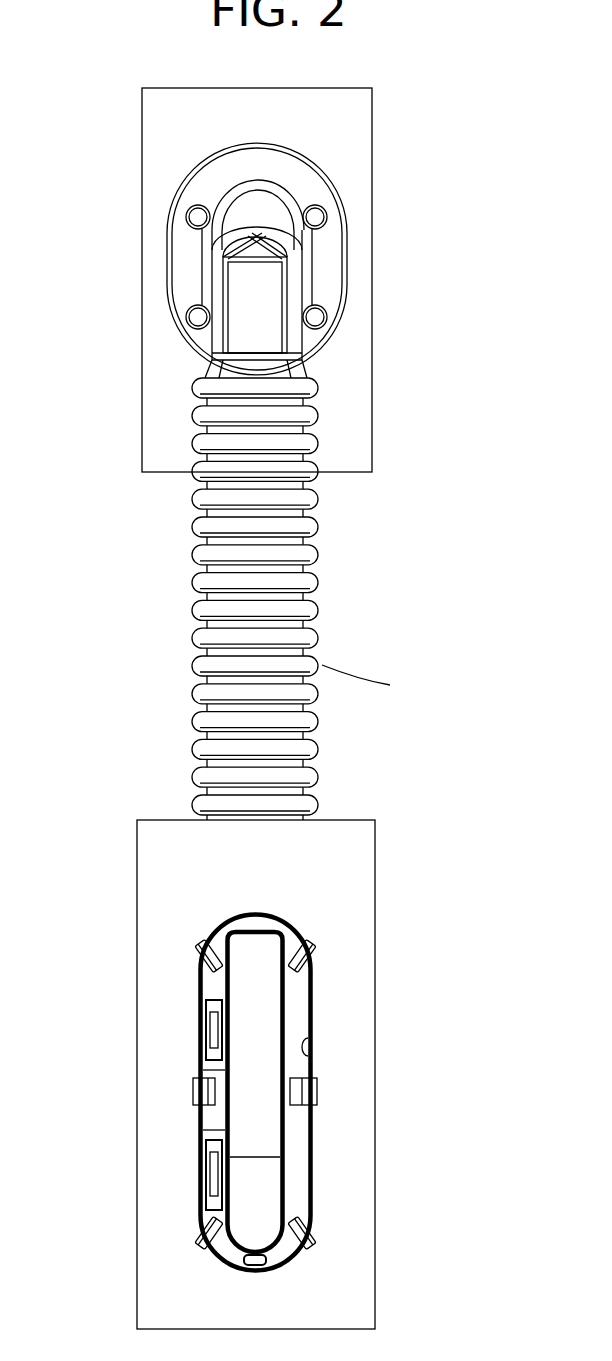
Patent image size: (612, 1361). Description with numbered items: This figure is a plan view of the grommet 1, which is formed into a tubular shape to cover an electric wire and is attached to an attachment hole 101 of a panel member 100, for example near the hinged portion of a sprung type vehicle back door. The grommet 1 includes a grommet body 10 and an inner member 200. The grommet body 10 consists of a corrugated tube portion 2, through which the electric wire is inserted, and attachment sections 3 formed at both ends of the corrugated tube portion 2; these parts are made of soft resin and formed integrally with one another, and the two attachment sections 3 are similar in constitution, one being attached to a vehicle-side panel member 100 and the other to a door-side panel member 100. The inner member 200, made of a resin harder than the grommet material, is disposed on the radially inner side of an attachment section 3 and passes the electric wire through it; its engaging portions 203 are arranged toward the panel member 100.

The grommet 1 is at (273, 706).
The corrugated tube portion 2 is at (302, 636).
The attachment section 3 is at (320, 262).
The grommet body 10 is at (322, 665).
The panel member 100 is at (350, 118).
The attachment hole 101 is at (296, 1056).
The inner member 200 is at (292, 995).
The engaging portion 203 is at (196, 950).